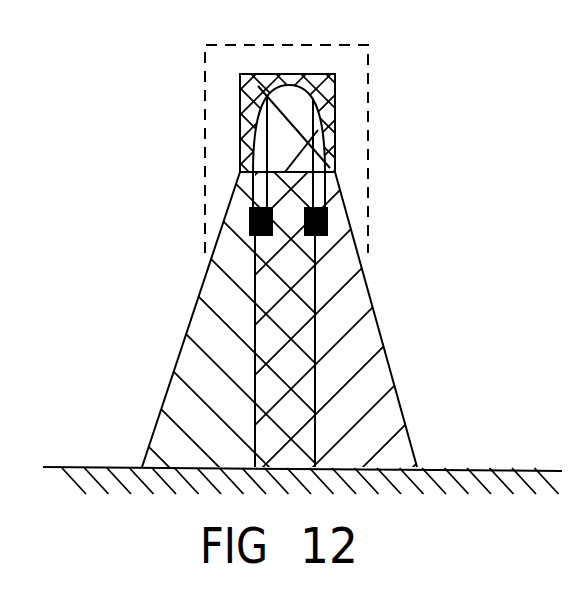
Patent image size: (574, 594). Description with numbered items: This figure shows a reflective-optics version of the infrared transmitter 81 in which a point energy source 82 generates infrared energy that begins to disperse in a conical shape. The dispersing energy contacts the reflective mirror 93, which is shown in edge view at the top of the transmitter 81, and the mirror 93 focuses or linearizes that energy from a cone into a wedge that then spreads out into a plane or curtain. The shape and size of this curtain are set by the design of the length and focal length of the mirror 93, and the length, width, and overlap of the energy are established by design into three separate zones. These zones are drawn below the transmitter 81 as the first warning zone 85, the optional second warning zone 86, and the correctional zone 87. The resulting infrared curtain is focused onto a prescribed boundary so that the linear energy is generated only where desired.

The transmitter 81 is at (377, 134).
The point energy source 82 is at (344, 230).
The first warning zone 85 is at (377, 396).
The optional second warning zone 86 is at (255, 321).
The correctional zone 87 is at (198, 381).
The reflective mirror 93 is at (224, 93).